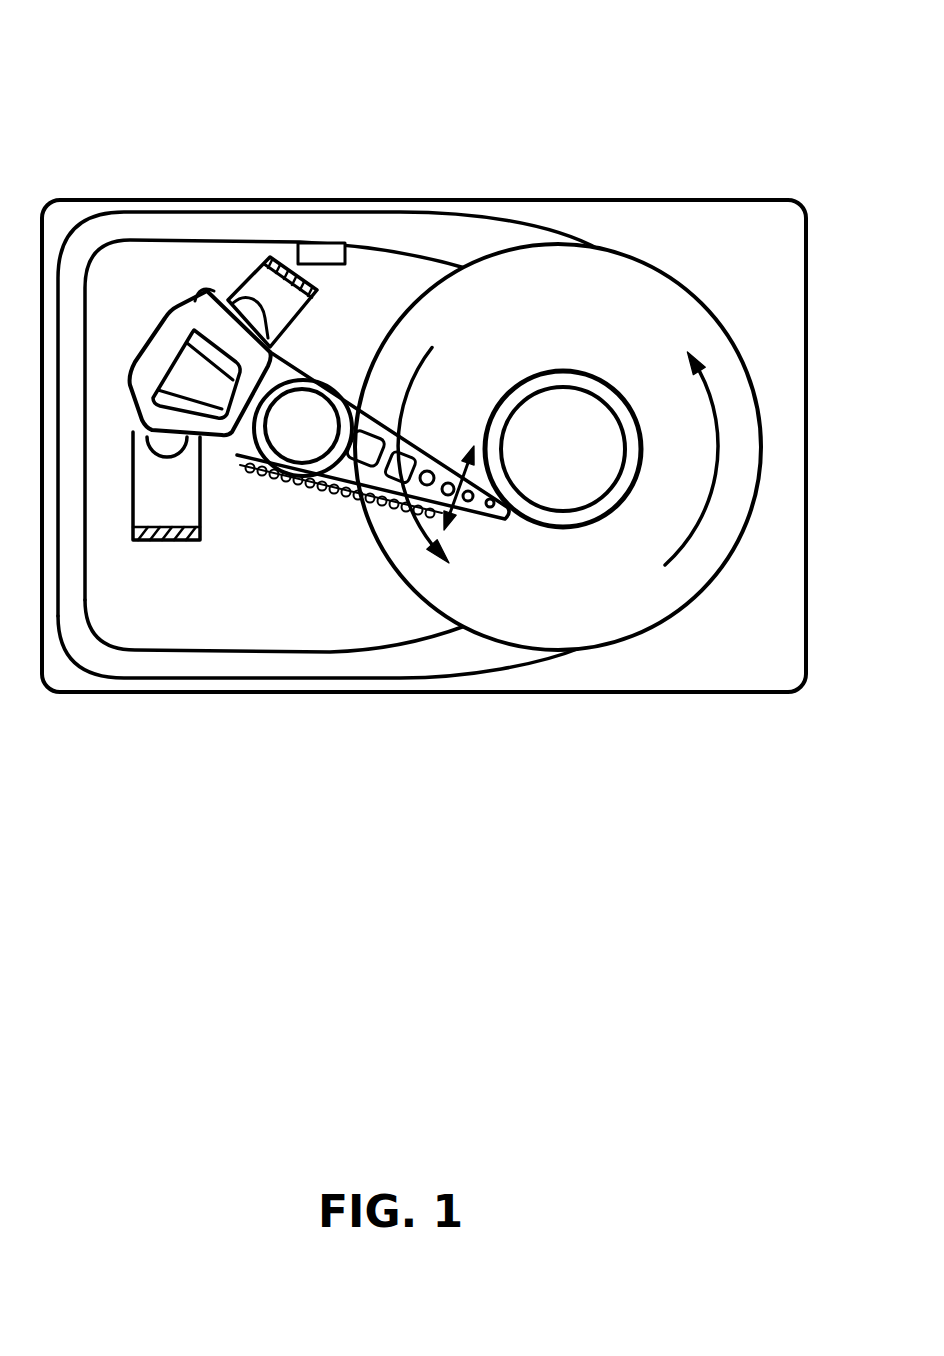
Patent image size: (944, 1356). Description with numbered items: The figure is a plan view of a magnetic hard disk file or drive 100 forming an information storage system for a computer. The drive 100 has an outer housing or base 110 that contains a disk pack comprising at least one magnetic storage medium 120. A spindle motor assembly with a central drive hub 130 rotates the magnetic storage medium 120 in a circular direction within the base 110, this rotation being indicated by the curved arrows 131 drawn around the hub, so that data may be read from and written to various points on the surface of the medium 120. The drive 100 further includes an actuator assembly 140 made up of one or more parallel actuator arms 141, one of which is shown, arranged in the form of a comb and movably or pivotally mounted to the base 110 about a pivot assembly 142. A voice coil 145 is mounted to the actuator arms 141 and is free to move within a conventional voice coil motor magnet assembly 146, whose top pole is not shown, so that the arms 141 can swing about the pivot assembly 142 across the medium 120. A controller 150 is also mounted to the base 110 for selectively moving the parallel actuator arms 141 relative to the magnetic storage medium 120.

The magnetic hard disk drive 100 is at (766, 84).
The outer housing or base 110 is at (640, 200).
The magnetic storage medium 120 is at (677, 281).
The central drive hub 130 is at (598, 378).
The rotation direction arrows 131 is at (421, 366).
The actuator assembly 140 is at (214, 563).
The actuator arm 141 is at (358, 405).
The pivot assembly 142 is at (298, 464).
The voice coil 145 is at (160, 325).
The voice coil motor magnet assembly 146 is at (257, 287).
The controller 150 is at (333, 263).